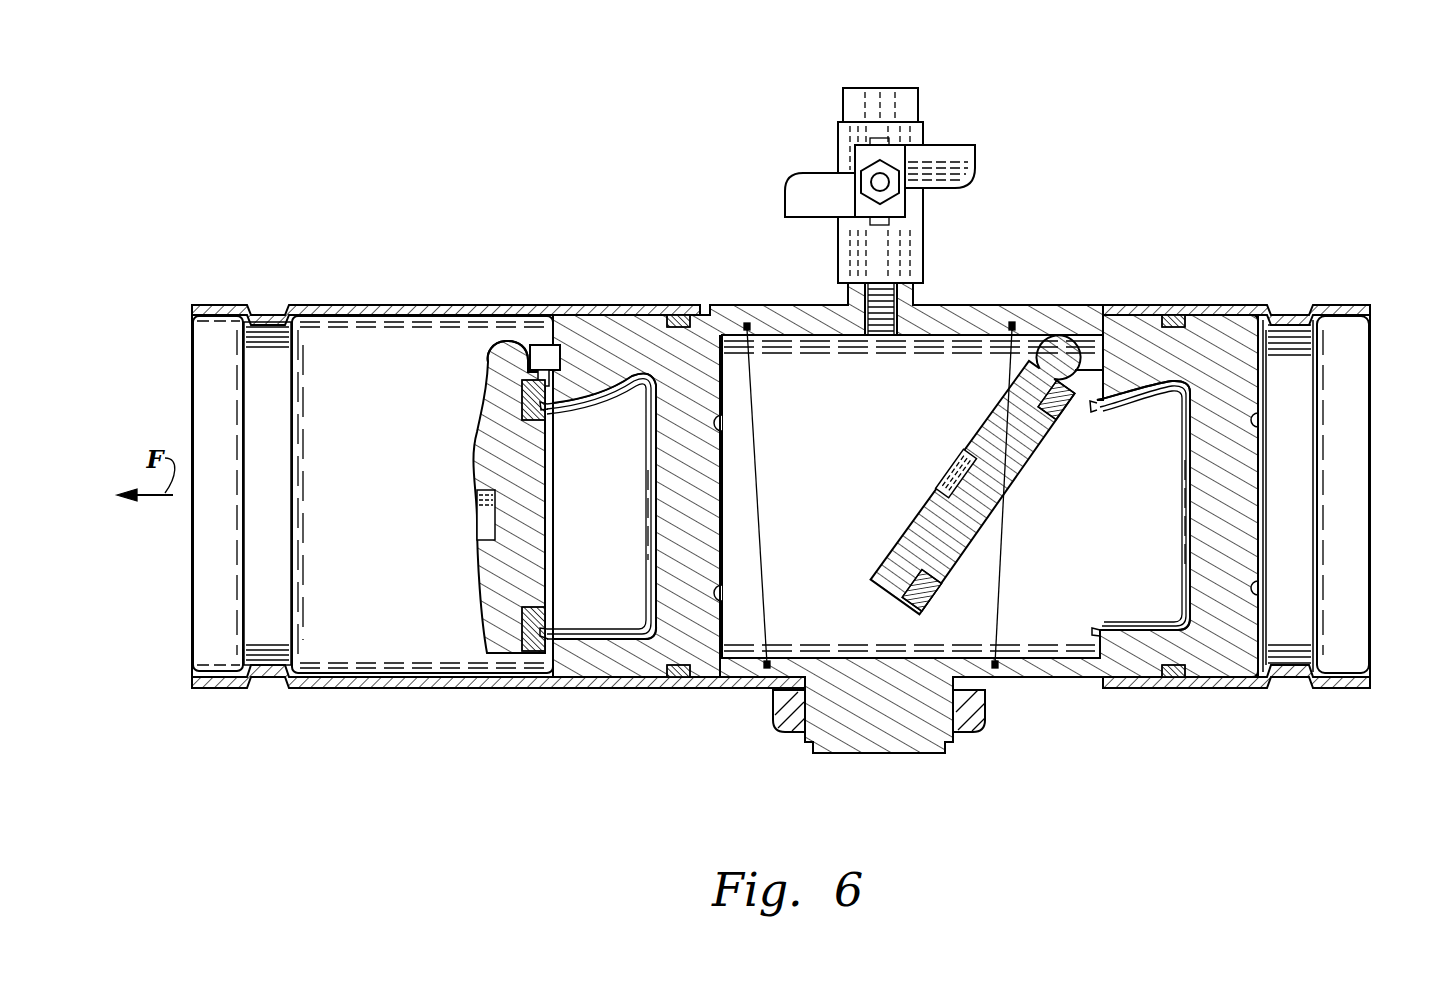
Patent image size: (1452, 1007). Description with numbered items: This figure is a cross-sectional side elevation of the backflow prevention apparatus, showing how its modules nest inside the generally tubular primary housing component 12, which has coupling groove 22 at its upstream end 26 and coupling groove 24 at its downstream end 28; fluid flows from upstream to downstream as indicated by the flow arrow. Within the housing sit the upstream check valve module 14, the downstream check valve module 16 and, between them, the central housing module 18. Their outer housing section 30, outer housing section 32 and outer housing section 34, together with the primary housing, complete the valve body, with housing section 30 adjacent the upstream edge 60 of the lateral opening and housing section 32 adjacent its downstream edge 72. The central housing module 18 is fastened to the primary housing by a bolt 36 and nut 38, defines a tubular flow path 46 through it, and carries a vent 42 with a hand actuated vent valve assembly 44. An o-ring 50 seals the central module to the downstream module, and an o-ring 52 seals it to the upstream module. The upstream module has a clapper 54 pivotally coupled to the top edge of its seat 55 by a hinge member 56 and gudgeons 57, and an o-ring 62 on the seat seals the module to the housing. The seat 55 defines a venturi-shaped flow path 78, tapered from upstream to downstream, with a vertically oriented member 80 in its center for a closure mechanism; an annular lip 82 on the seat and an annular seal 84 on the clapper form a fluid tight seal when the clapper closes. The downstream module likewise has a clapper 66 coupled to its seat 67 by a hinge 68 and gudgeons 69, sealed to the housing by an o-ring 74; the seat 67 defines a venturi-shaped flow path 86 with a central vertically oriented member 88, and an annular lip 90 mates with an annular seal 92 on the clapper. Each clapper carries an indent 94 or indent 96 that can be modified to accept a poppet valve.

The primary housing component 12 is at (318, 688).
The upstream check valve module 14 is at (1237, 317).
The downstream check valve module 16 is at (572, 690).
The central housing module 18 is at (777, 675).
The coupling groove 22 is at (1285, 385).
The coupling groove 24 is at (263, 573).
The upstream end 26 is at (1370, 602).
The downstream end 28 is at (192, 600).
The outer housing section 30 is at (1087, 352).
The outer housing section 32 is at (733, 317).
The outer housing section 34 is at (990, 310).
The bolt 36 is at (945, 745).
The nut 38 is at (975, 715).
The vent 42 is at (907, 102).
The vent valve assembly 44 is at (957, 150).
The flow path 46 is at (877, 385).
The o-ring 50 is at (747, 330).
The o-ring 52 is at (1010, 330).
The clapper 54 is at (983, 417).
The seat 55 is at (1150, 688).
The hinge member 56 is at (1062, 357).
The gudgeons 57 is at (1103, 320).
The upstream edge 60 is at (1143, 310).
The o-ring 62 is at (1172, 318).
The clapper 66 is at (487, 403).
The seat 67 is at (613, 330).
The hinge 68 is at (505, 355).
The gudgeons 69 is at (540, 352).
The downstream edge 72 is at (708, 305).
The o-ring 74 is at (685, 320).
The venturi-shaped flow path 78 is at (1133, 556).
The vertically oriented member 80 is at (1220, 450).
The annular lip 82 is at (1100, 410).
The annular seal 84 is at (1062, 420).
The venturi-shaped flow path 86 is at (625, 580).
The vertically oriented member 88 is at (693, 492).
The annular lip 90 is at (553, 408).
The annular seal 92 is at (520, 392).
The indent 94 is at (947, 470).
The indent 96 is at (487, 510).